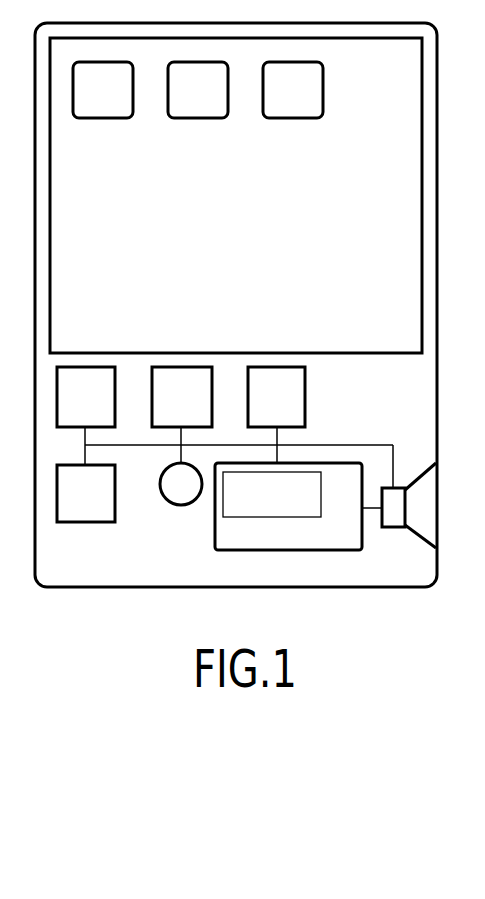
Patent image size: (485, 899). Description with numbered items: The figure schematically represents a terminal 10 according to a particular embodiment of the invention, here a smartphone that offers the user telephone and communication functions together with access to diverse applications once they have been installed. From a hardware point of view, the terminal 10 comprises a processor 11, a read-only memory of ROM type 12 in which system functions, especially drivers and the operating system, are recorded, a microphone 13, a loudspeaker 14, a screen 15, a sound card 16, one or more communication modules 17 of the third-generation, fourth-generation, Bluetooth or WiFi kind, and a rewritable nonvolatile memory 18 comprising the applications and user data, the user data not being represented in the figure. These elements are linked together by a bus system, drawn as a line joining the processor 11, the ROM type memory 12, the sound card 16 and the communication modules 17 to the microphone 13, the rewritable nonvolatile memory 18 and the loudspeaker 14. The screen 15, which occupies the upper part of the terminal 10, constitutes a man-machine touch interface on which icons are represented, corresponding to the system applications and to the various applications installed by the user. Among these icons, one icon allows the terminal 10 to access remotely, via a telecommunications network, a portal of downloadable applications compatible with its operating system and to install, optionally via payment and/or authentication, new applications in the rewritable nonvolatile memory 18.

The terminal 10 is at (225, 588).
The processor 11 is at (74, 408).
The read-only memory of ROM type 12 is at (170, 408).
The microphone 13 is at (172, 504).
The loudspeaker 14 is at (392, 529).
The screen 15 is at (405, 338).
The sound card 16 is at (265, 408).
The communication modules 17 is at (74, 506).
The rewritable nonvolatile memory 18 is at (320, 551).